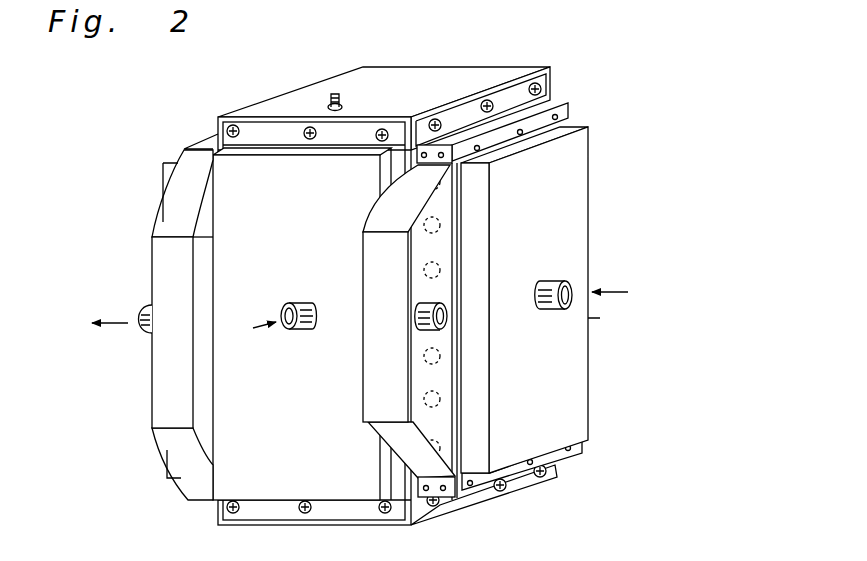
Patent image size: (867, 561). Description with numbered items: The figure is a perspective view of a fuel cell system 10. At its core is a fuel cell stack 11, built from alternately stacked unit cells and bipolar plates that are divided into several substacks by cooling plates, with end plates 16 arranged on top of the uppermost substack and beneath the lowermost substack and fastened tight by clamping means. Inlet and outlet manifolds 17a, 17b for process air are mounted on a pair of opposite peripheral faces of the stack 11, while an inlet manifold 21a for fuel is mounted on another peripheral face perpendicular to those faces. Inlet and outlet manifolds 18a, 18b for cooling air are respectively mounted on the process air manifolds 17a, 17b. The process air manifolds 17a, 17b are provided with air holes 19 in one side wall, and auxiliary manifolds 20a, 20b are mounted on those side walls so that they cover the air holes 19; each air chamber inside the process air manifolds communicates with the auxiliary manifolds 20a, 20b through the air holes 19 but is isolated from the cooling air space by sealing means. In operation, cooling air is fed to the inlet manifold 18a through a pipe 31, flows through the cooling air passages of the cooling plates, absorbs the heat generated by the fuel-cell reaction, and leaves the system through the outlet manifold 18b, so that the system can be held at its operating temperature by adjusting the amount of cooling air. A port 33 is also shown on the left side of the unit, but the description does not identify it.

The fuel cell system 10 is at (524, 52).
The fuel cell stack 11 is at (385, 68).
The end plate 16 is at (438, 88).
The inlet manifold for process air 17a is at (543, 104).
The outlet manifold for process air 17b is at (212, 137).
The inlet manifold for cooling air 18a is at (573, 188).
The outlet manifold for cooling air 18b is at (168, 174).
The air holes 19 is at (437, 223).
The auxiliary manifold 20a is at (378, 403).
The auxiliary manifold 20b is at (168, 397).
The inlet manifold for fuel 21a is at (236, 478).
The pipe 31 is at (548, 286).
The hydrogen outlet port 33 is at (146, 308).